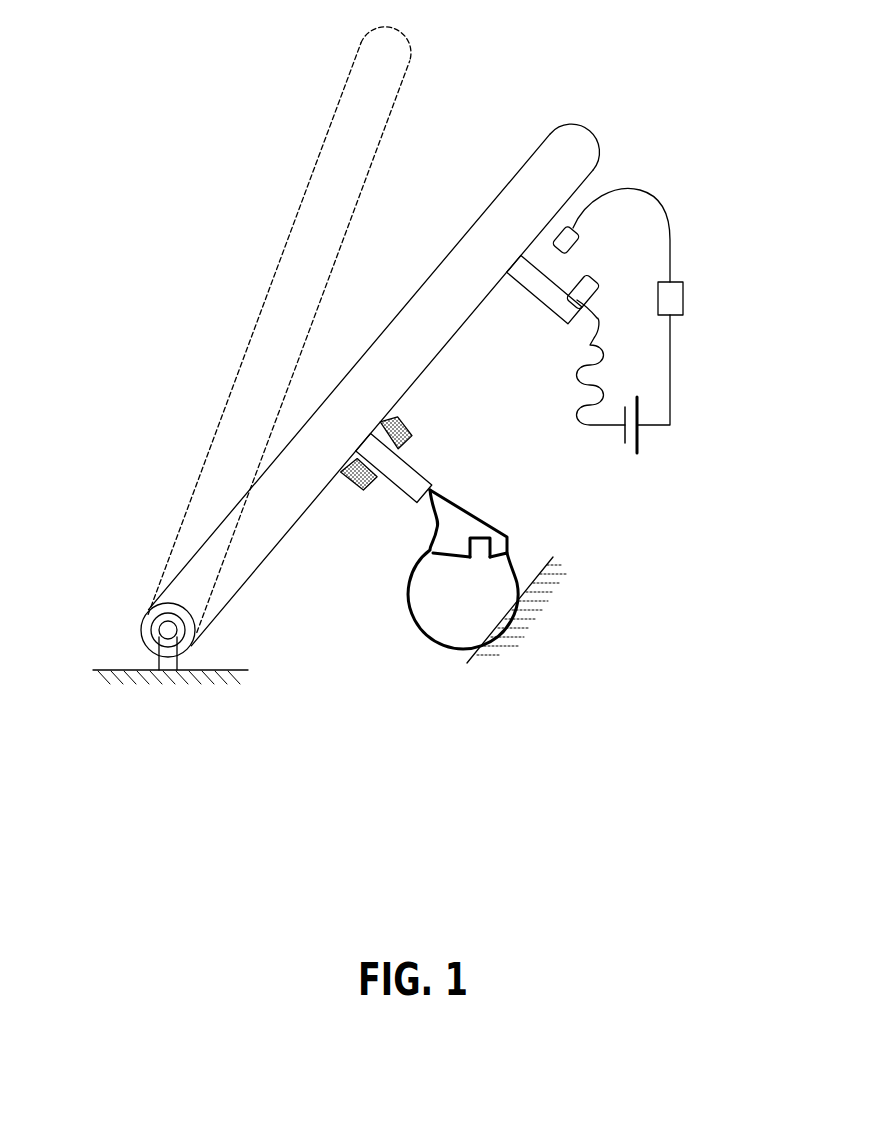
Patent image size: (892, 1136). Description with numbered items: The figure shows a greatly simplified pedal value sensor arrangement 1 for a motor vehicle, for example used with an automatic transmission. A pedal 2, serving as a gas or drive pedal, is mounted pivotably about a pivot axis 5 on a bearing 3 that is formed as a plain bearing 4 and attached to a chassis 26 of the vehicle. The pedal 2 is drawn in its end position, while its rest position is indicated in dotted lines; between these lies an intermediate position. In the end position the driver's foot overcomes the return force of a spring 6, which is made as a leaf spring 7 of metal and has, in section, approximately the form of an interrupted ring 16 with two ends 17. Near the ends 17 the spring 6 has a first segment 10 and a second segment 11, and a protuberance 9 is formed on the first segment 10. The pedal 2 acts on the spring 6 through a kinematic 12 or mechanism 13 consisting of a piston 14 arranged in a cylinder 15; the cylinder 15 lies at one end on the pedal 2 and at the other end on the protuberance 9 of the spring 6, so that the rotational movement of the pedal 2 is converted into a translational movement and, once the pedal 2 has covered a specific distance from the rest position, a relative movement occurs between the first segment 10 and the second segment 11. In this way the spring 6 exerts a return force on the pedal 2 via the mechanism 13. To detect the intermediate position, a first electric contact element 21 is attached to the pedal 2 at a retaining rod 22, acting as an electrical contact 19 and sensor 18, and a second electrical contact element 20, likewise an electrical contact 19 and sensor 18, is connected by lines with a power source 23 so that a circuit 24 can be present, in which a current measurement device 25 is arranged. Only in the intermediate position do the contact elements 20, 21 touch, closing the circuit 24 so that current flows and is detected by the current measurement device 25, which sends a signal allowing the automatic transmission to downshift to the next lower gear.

The pedal value sensor arrangement 1 is at (320, 662).
The pedal 2 is at (529, 181).
The bearing 3 is at (118, 623).
The plain bearing 4 is at (150, 624).
The pivot axis 5 is at (157, 633).
The spring 6 is at (500, 608).
The leaf spring 7 is at (500, 608).
The protuberance 9 is at (518, 494).
The first segment 10 is at (478, 535).
The second segment 11 is at (509, 552).
The kinematic 12 is at (329, 528).
The mechanism 13 is at (351, 492).
The piston 14 is at (404, 470).
The cylinder 15 is at (396, 428).
The interrupted ring 16 is at (500, 608).
The ends 17 is at (466, 556).
The sensor 18 is at (591, 254).
The electrical contact 19 is at (591, 254).
The second electrical contact element 20 is at (571, 232).
The first electric contact element 21 is at (575, 300).
The retaining rod 22 is at (521, 272).
The power source 23 is at (640, 437).
The circuit 24 is at (687, 326).
The current measurement device 25 is at (683, 302).
The chassis 26 is at (145, 686).